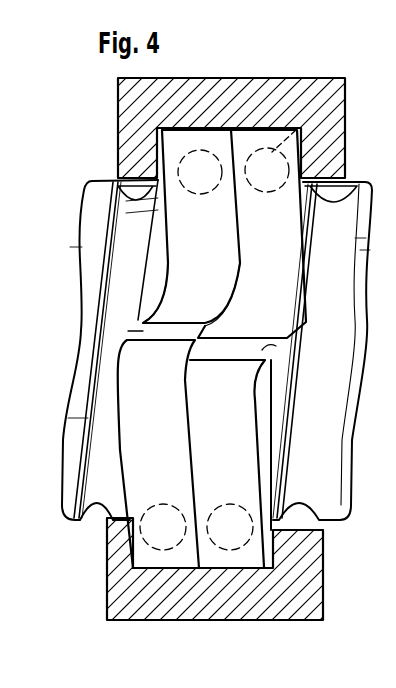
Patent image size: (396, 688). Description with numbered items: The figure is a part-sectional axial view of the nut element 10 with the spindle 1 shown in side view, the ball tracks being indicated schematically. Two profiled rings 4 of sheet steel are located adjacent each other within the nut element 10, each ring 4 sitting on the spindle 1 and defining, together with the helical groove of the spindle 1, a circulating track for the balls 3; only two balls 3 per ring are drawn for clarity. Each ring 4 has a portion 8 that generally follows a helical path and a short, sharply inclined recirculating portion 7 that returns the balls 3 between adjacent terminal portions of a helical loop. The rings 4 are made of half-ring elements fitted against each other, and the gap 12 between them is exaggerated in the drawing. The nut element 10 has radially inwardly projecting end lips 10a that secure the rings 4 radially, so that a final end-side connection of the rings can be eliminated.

The spindle 1 is at (333, 462).
The ball 3 is at (309, 118).
The profiled ring 4 is at (200, 207).
The recirculating portion 7 is at (173, 317).
The helical portion 8 is at (147, 238).
The nut element 10 is at (263, 110).
The end lips 10a is at (107, 585).
The gap 12 is at (143, 335).